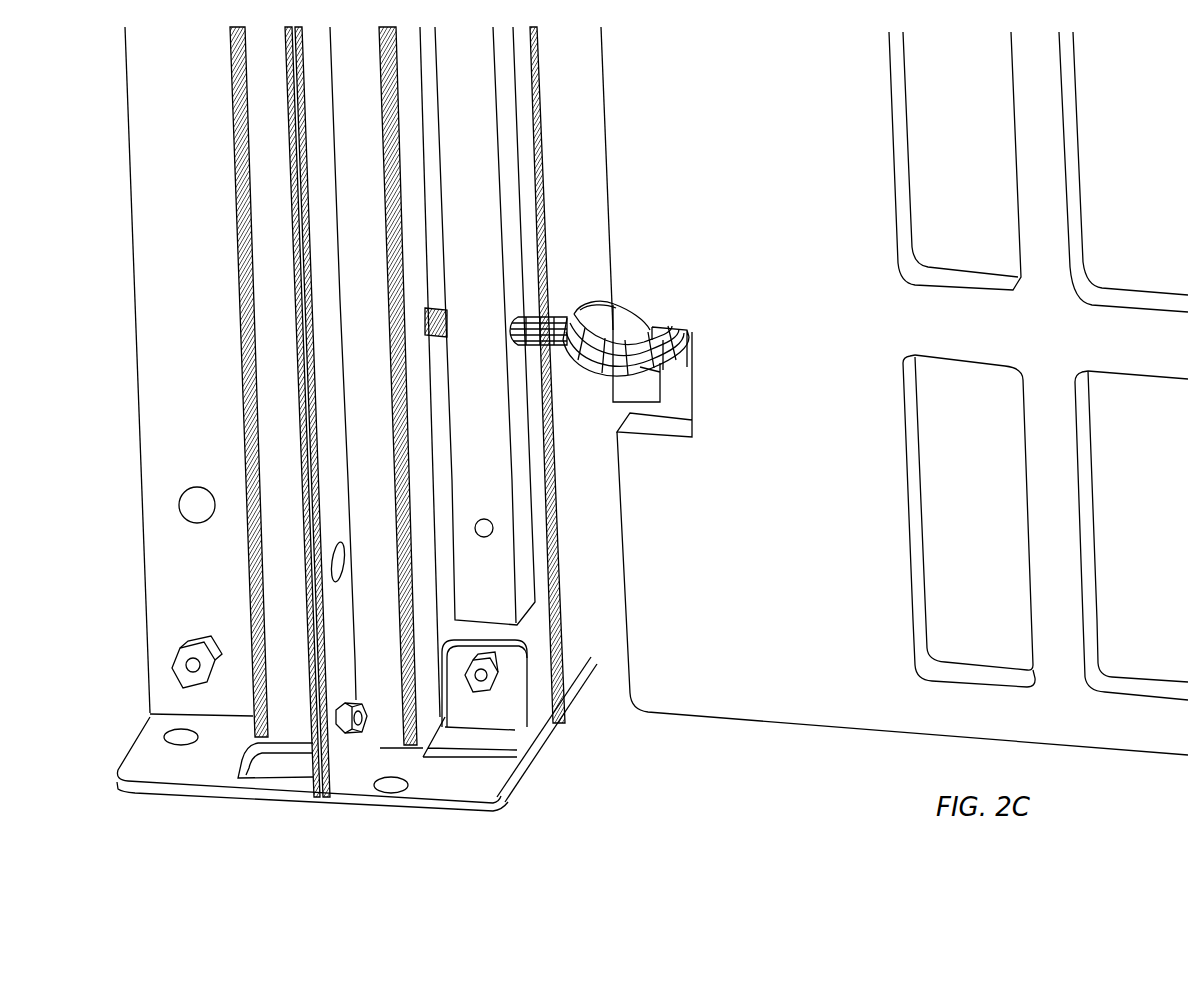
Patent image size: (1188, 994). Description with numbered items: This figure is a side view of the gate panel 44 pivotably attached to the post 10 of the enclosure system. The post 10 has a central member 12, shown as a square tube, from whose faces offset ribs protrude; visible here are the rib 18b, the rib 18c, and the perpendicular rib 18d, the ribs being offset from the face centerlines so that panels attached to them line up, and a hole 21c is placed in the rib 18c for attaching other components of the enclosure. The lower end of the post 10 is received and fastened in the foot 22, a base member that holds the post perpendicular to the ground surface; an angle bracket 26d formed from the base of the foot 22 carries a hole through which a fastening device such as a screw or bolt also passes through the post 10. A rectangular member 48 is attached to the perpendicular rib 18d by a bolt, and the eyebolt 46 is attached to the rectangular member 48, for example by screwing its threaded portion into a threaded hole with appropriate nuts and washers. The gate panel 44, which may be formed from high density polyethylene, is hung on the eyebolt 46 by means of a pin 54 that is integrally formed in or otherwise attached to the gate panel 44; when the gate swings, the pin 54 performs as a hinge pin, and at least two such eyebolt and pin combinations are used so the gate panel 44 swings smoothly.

The post 10 is at (140, 577).
The central member 12 is at (263, 308).
The rib 18b is at (336, 763).
The rib 18c is at (172, 387).
The perpendicular rib 18d is at (543, 700).
The hole 21c is at (178, 503).
The foot 22 is at (128, 742).
The angle bracket 26d is at (503, 710).
The gate panel 44 is at (739, 724).
The eyebolt 46 is at (610, 305).
The rectangular member 48 is at (483, 233).
The pin 54 is at (642, 393).